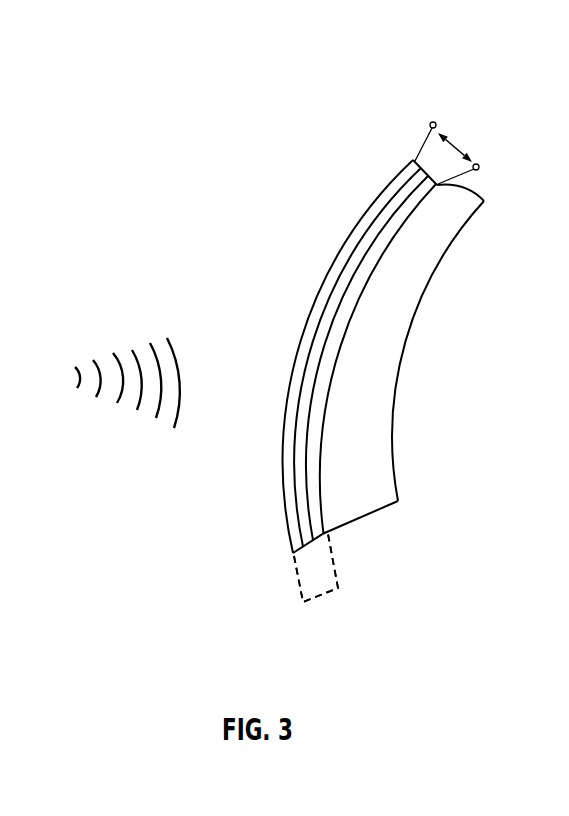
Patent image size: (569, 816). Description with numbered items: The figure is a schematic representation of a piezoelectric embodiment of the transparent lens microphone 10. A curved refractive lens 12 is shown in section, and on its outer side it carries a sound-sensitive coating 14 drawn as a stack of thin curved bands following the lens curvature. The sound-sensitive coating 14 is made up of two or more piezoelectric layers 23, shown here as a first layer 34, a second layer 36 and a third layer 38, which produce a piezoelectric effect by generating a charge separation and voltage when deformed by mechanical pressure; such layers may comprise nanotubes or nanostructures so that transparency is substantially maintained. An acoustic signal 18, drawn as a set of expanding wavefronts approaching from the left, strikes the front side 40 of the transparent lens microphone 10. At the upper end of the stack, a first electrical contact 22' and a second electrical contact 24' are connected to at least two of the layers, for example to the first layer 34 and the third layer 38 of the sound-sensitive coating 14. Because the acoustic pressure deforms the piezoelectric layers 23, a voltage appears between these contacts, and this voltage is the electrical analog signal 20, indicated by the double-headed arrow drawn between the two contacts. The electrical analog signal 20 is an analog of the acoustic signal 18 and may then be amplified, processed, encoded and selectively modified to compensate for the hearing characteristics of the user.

The transparent lens microphone 10 is at (203, 99).
The refractive lens 12 is at (398, 380).
The sound-sensitive coating 14 is at (358, 584).
The piezoelectric layers 23 is at (320, 597).
The acoustic signal 18 is at (177, 402).
The electrical analog signal 20 is at (457, 143).
The first electrical contact 22' is at (490, 168).
The second electrical contact 24' is at (399, 139).
The first layer 34 is at (320, 518).
The second layer 36 is at (302, 492).
The third layer 38 is at (288, 527).
The front side 40 is at (302, 320).